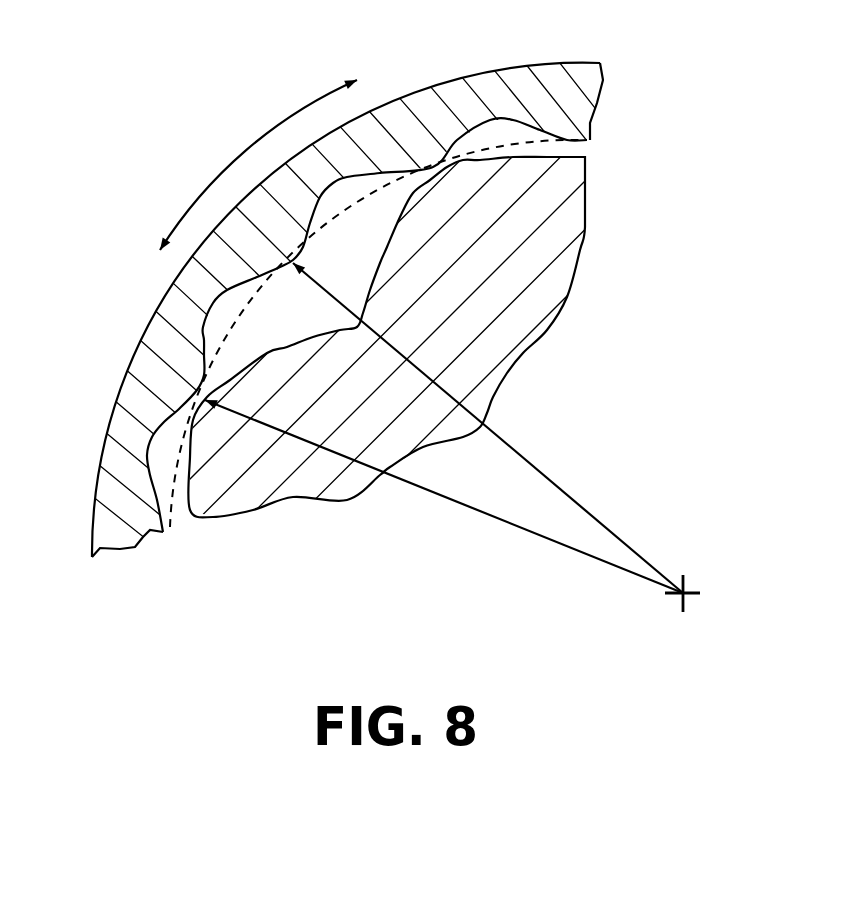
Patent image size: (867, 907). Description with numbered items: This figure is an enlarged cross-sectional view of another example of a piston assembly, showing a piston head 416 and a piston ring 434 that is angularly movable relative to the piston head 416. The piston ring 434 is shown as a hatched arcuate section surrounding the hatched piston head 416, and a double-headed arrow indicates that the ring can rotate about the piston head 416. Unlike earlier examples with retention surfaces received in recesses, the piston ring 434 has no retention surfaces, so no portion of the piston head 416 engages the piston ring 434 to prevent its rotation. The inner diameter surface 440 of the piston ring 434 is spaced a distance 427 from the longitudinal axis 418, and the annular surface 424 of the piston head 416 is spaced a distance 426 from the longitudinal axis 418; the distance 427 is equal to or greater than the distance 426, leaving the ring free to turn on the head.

The piston ring 434 is at (100, 447).
The piston head 416 is at (283, 497).
The longitudinal axis 418 is at (700, 587).
The distance 426 is at (557, 537).
The distance 427 is at (570, 495).
The inner diameter surface 440 is at (590, 143).
The annular surface 424 is at (587, 150).